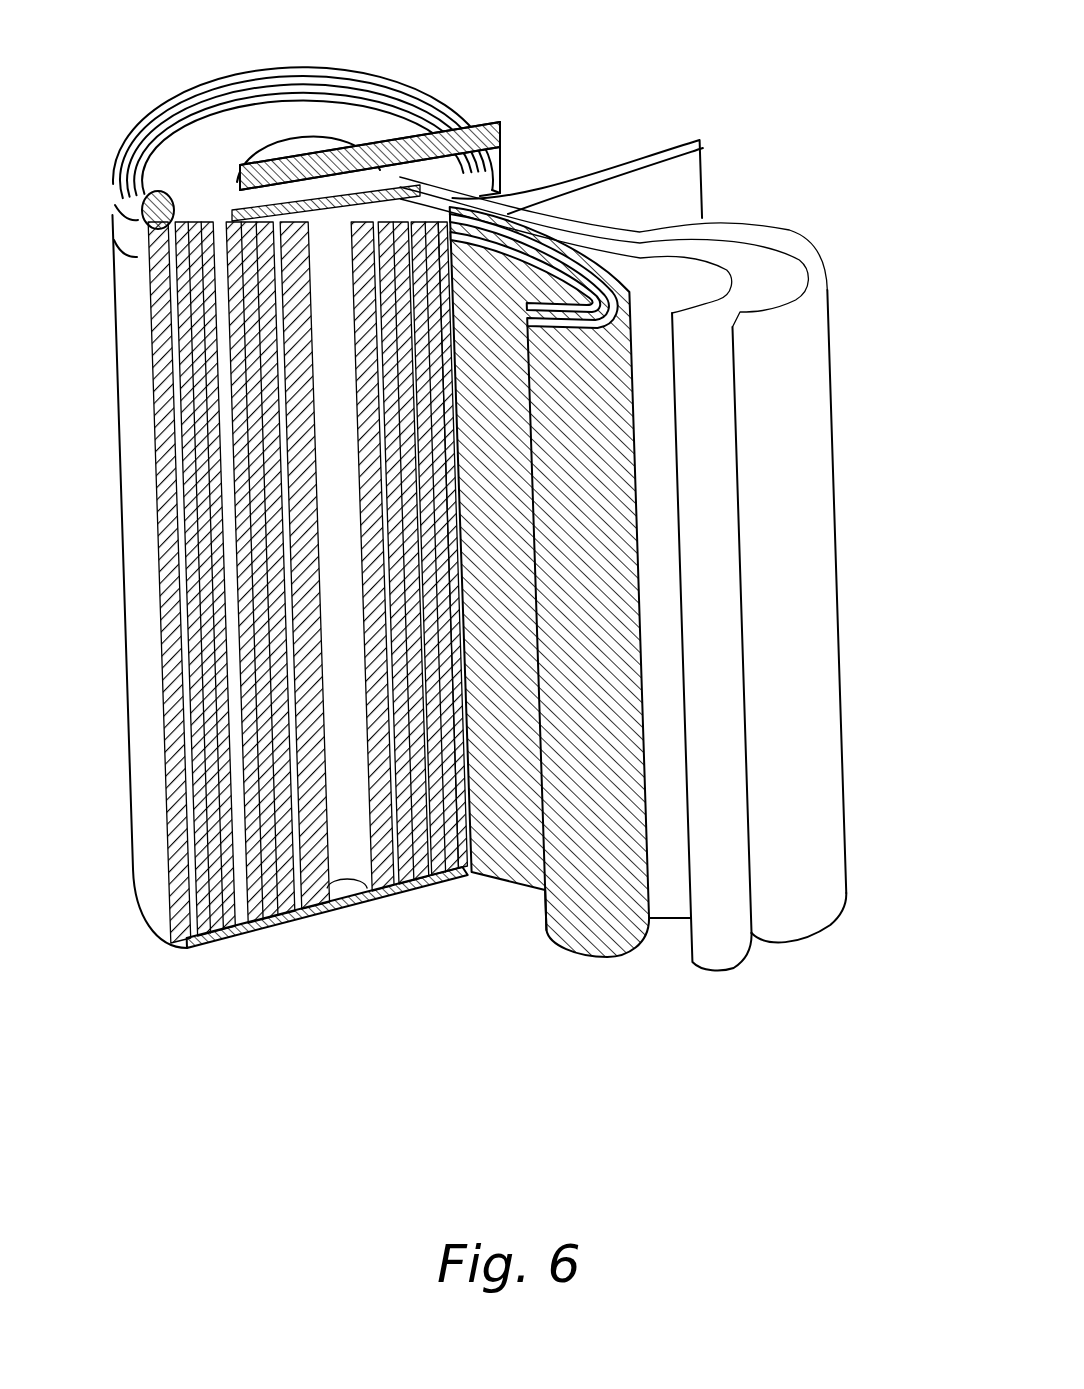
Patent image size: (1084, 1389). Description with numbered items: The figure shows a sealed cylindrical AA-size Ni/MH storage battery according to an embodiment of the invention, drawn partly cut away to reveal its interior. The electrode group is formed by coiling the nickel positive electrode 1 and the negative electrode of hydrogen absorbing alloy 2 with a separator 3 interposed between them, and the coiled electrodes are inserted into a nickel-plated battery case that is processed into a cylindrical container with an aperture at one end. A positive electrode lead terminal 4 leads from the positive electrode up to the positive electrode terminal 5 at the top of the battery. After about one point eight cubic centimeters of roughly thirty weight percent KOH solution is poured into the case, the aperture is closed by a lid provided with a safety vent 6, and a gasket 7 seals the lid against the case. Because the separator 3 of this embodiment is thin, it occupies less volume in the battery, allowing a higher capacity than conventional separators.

The nickel positive electrode 1 is at (597, 443).
The negative electrode of hydrogen absorbing alloy 2 is at (767, 483).
The separator 3 is at (670, 202).
The positive electrode lead terminal 4 is at (457, 190).
The positive electrode terminal 5 is at (280, 145).
The safety vent 6 is at (327, 173).
The gasket 7 is at (133, 140).